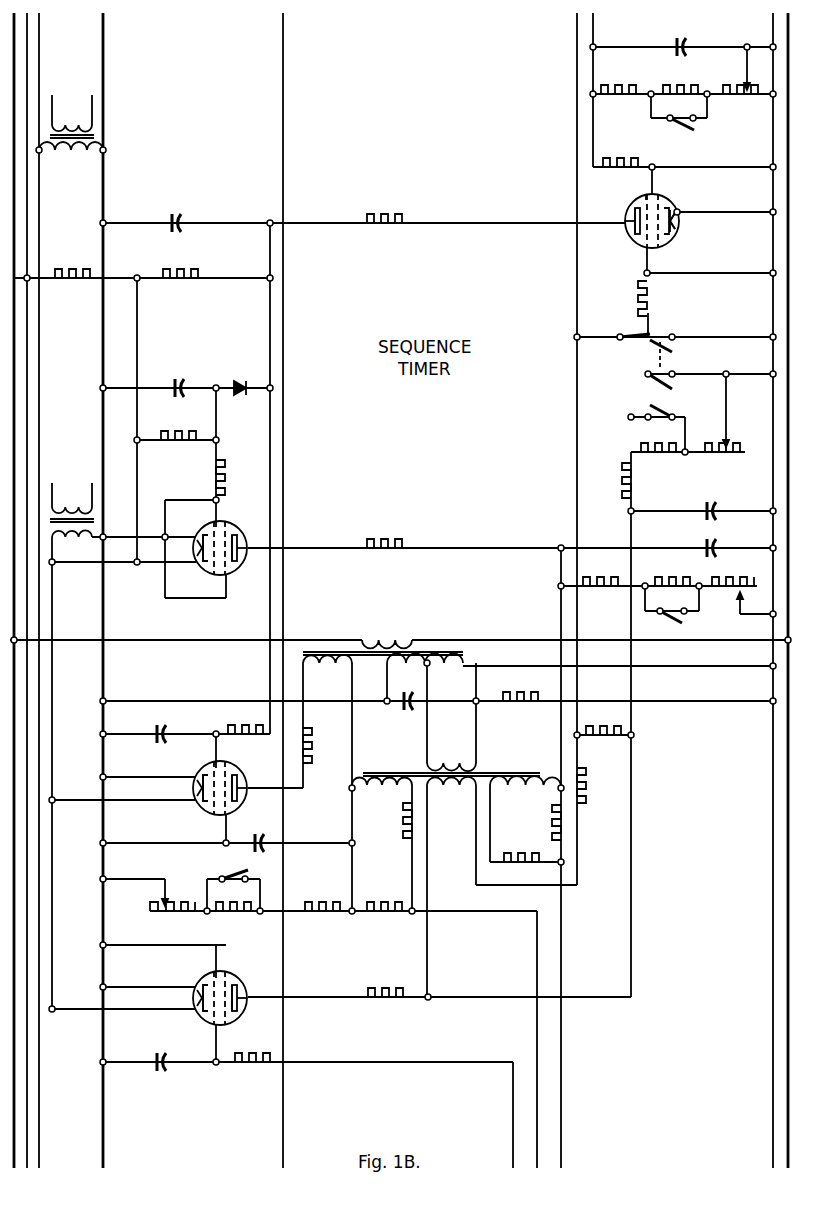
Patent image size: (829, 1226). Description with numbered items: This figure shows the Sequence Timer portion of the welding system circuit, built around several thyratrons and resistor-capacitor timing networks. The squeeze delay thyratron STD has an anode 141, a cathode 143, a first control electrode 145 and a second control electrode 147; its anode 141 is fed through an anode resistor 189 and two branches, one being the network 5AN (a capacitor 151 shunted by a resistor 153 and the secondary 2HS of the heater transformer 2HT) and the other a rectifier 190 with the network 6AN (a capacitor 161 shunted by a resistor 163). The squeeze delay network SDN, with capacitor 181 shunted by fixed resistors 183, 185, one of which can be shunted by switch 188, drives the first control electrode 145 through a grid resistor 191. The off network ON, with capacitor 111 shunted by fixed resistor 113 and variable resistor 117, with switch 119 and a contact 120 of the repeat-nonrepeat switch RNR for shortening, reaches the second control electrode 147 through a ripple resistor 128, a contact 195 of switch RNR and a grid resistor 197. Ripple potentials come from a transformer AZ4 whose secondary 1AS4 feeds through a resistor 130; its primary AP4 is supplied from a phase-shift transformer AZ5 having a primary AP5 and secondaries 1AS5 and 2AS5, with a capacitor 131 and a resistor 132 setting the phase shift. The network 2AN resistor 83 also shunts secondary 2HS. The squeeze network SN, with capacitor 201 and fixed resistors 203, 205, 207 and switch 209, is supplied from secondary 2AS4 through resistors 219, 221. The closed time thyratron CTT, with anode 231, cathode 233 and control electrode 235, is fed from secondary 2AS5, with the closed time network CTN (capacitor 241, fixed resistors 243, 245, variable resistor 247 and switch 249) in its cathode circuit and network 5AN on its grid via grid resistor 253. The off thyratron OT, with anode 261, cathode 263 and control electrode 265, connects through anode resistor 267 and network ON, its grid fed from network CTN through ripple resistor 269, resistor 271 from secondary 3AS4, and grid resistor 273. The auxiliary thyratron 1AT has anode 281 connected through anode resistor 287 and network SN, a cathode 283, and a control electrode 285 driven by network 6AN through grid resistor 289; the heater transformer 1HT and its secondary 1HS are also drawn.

The capacitor 181 is at (677, 42).
The fixed resistor 185 is at (680, 85).
The fixed resistor 183 is at (629, 95).
The switch 188 is at (675, 132).
The grid resistor 191 is at (606, 163).
The second control electrode 147 is at (648, 201).
The first control electrode 145 is at (668, 206).
The anode 141 is at (629, 233).
The cathode 143 is at (668, 238).
The grid resistor 197 is at (648, 307).
The contact 195 is at (640, 336).
The contact 120 is at (662, 372).
The switch 119 is at (664, 415).
The variable resistor 117 is at (733, 442).
The fixed resistor 113 is at (626, 480).
The capacitor 111 is at (704, 502).
The capacitor 201 is at (703, 546).
The fixed resistor 205 is at (683, 579).
The fixed resistor 207 is at (728, 586).
The fixed resistor 203 is at (600, 594).
The switch 209 is at (680, 622).
The anode resistor 189 is at (380, 217).
The anode resistor 287 is at (386, 545).
The capacitor 151 is at (178, 222).
The resistor 153 is at (183, 275).
The resistor 83 is at (78, 273).
The capacitor 161 is at (181, 378).
The rectifier 190 is at (239, 379).
The resistor 163 is at (182, 448).
The grid resistor 289 is at (220, 463).
The control electrode 285 is at (218, 530).
The anode 281 is at (239, 536).
The cathode 283 is at (207, 572).
The grid resistor 253 is at (226, 731).
The control electrode 235 is at (220, 774).
The anode 231 is at (243, 784).
The cathode 233 is at (198, 805).
The capacitor 241 is at (258, 835).
The switch 249 is at (217, 876).
The variable resistor 247 is at (163, 912).
The fixed resistor 245 is at (238, 913).
The fixed resistor 243 is at (322, 905).
The resistor 269 is at (388, 905).
The resistor 271 is at (403, 838).
The capacitor 131 is at (406, 712).
The resistor 132 is at (518, 707).
The resistor 128 is at (603, 742).
The resistor 130 is at (586, 785).
The resistor 219 is at (549, 825).
The resistor 221 is at (528, 867).
The control electrode 265 is at (210, 972).
The anode 261 is at (240, 1012).
The cathode 263 is at (197, 1012).
The anode resistor 267 is at (381, 993).
The grid resistor 273 is at (251, 1066).
The heater transformer 1HT is at (72, 125).
The secondary 1HS is at (70, 152).
The heater transformer 2HT is at (70, 499).
The secondary 2HS is at (66, 539).
The auxiliary thyratron 1AT is at (235, 571).
The squeeze delay thyratron STD is at (629, 215).
The closed time thyratron CTT is at (197, 777).
The off thyratron OT is at (238, 970).
The squeeze delay network SDN is at (658, 66).
The repeat-nonrepeat switch RNR is at (632, 368).
The off network ON is at (723, 482).
The squeeze network SN is at (616, 570).
The auxiliary network 5AN is at (165, 259).
The auxiliary network 6AN is at (194, 422).
The closed time network CTN is at (278, 876).
The primary AP5 is at (382, 641).
The transformer AZ5 is at (466, 654).
The secondary 2AS5 is at (324, 668).
The secondary 1AS5 is at (438, 668).
The primary AP4 is at (456, 763).
The transformer AZ4 is at (492, 778).
The secondary 3AS4 is at (383, 792).
The secondary 1AS4 is at (450, 791).
The secondary 2AS4 is at (521, 791).